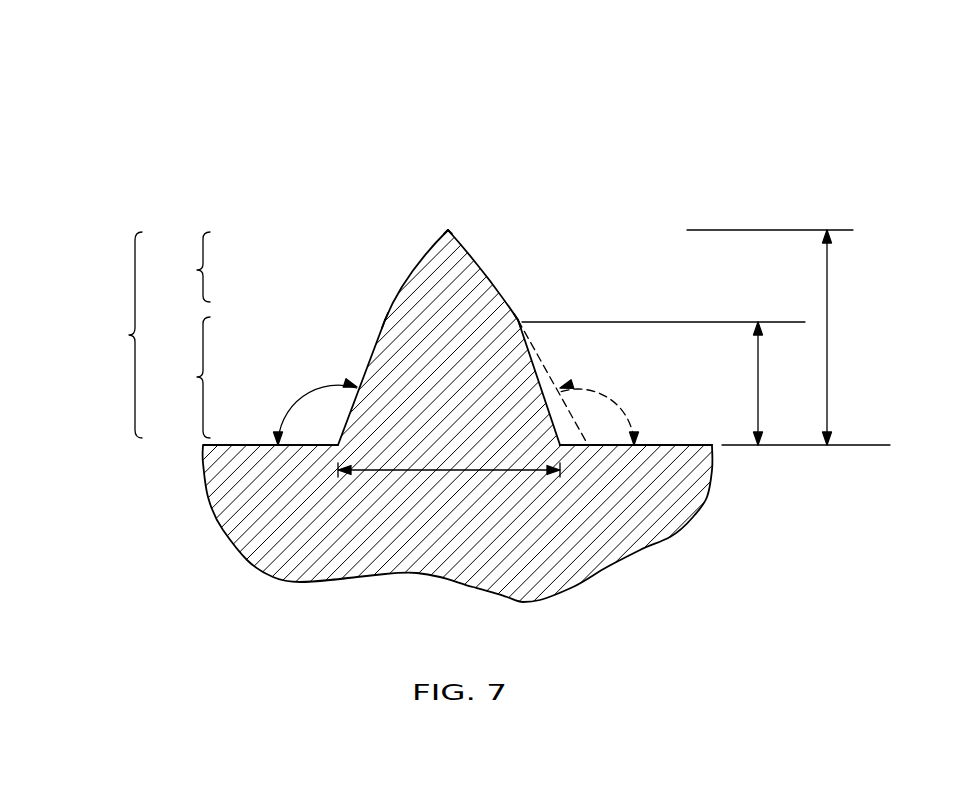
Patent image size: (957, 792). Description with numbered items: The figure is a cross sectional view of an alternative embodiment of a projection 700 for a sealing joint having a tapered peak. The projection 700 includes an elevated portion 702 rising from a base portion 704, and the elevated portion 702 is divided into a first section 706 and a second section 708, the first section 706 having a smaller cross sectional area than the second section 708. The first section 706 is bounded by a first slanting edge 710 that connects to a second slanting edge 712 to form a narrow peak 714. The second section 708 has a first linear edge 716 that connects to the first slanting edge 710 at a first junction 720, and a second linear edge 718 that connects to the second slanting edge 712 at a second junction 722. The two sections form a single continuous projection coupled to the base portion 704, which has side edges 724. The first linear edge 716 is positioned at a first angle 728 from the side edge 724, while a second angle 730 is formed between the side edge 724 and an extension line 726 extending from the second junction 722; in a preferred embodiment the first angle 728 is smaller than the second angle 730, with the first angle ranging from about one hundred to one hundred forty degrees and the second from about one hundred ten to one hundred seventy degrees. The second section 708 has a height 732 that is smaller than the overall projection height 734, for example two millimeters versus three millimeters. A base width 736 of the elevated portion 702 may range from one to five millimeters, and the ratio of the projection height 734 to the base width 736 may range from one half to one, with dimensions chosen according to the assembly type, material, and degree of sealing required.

The projection 700 is at (62, 85).
The elevated portion 702 is at (114, 335).
The base portion 704 is at (613, 560).
The first section 706 is at (183, 267).
The second section 708 is at (183, 377).
The first slanting edge 710 is at (418, 272).
The second slanting edge 712 is at (485, 277).
The narrow peak 714 is at (448, 230).
The first linear edge 716 is at (368, 367).
The second linear edge 718 is at (543, 393).
The first junction 720 is at (385, 320).
The second junction 722 is at (518, 318).
The side edge 724 is at (677, 445).
The extension line 726 is at (535, 347).
The first angle 728 is at (287, 410).
The second angle 730 is at (615, 398).
The height 732 is at (758, 403).
The projection height 734 is at (827, 338).
The base width 736 is at (472, 475).